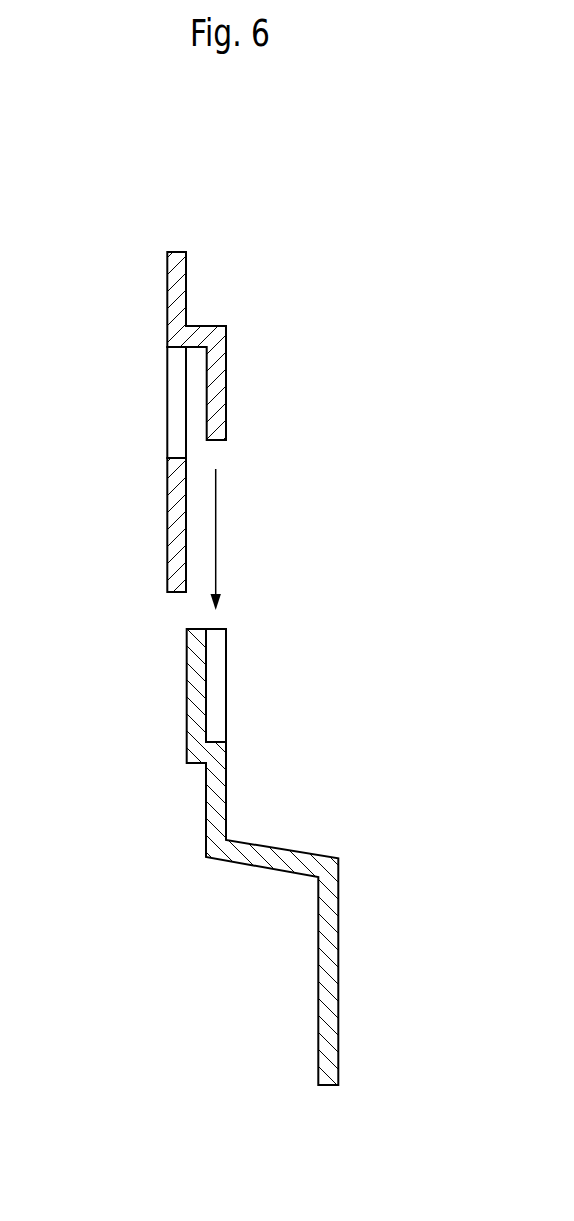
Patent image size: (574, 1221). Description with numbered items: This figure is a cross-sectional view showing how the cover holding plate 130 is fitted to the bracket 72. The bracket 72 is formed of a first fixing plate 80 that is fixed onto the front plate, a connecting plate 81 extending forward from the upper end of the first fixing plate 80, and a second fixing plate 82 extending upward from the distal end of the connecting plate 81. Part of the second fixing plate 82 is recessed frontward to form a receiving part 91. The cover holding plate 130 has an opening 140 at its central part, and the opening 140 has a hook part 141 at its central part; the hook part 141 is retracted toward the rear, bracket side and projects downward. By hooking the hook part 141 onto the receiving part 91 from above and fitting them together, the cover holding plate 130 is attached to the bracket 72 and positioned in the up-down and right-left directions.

The cover holding plate 130 is at (163, 247).
The opening 140 is at (167, 417).
The hook part 141 is at (228, 391).
The bracket 72 is at (177, 674).
The receiving part 91 is at (217, 685).
The second fixing plate 82 is at (227, 773).
The connecting plate 81 is at (280, 848).
The first fixing plate 80 is at (342, 985).